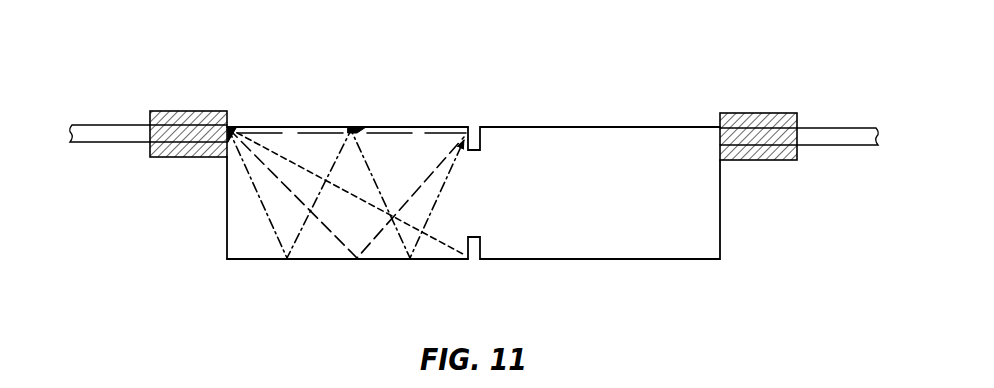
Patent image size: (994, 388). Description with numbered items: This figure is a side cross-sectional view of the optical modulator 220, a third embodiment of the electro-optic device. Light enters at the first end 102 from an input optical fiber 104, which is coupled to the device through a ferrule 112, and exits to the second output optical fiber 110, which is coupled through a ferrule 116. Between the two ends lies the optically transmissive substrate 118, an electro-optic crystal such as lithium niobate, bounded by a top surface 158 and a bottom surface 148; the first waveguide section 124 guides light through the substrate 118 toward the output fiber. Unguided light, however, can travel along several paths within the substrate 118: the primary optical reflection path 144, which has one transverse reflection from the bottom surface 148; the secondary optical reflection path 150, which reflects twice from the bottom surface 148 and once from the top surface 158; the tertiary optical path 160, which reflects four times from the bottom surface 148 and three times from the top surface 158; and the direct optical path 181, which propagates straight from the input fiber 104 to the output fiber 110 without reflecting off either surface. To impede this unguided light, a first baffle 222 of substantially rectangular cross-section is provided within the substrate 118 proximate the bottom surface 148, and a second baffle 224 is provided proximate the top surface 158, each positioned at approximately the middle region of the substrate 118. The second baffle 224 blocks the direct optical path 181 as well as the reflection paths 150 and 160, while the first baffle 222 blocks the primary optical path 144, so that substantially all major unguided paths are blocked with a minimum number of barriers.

The optical modulator 220 is at (588, 51).
The input optical fiber 104 is at (107, 125).
The ferrule 112 is at (175, 110).
The ferrule 116 is at (770, 112).
The second output optical fiber 110 is at (837, 128).
The first end 102 is at (226, 207).
The top surface 158 is at (273, 125).
The direct optical path 181 is at (447, 127).
The first waveguide section 124 is at (360, 127).
The second baffle 224 is at (481, 138).
The bottom surface 148 is at (625, 262).
The first baffle 222 is at (472, 264).
The optically transmissive substrate 118 is at (232, 246).
The tertiary optical path 160 is at (372, 186).
The secondary optical reflection path 150 is at (328, 237).
The primary optical reflection path 144 is at (452, 253).